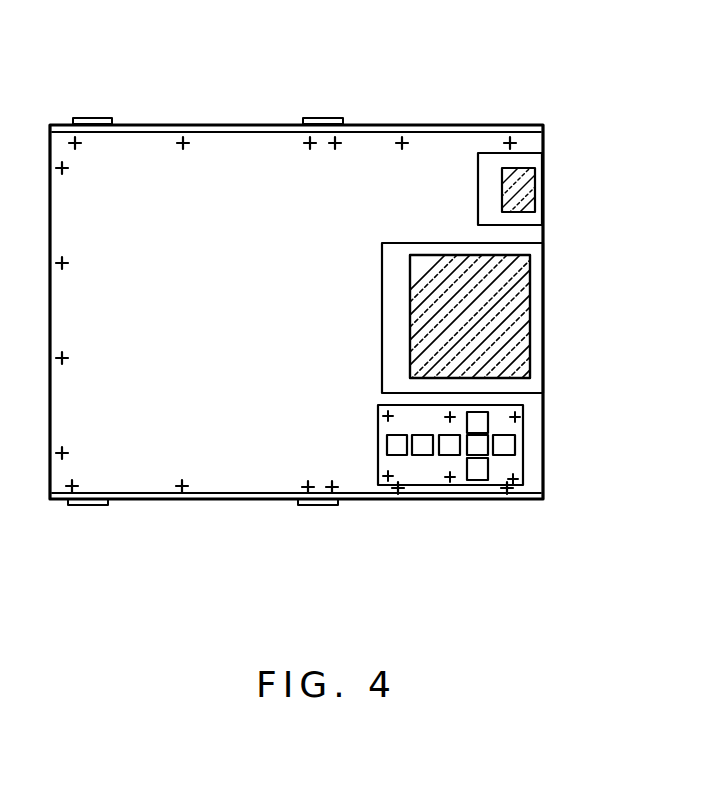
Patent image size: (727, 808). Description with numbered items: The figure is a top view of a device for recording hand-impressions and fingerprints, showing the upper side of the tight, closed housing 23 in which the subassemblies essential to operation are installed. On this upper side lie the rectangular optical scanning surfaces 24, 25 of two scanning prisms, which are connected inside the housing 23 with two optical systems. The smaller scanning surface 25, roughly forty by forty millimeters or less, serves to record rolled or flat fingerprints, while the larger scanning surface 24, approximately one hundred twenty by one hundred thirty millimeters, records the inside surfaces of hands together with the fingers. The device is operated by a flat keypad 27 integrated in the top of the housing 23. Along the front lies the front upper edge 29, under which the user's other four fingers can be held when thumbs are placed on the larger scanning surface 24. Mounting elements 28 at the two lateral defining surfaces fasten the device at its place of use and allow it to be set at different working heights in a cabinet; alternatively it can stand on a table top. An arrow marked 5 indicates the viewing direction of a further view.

The housing 23 is at (372, 142).
The scanning surface 24 is at (521, 300).
The scanning surface 25 is at (533, 180).
The flat keypad 27 is at (417, 473).
The mounting elements 28 is at (312, 119).
The front upper edge 29 is at (547, 433).
The section line arrow 5 is at (343, 543).